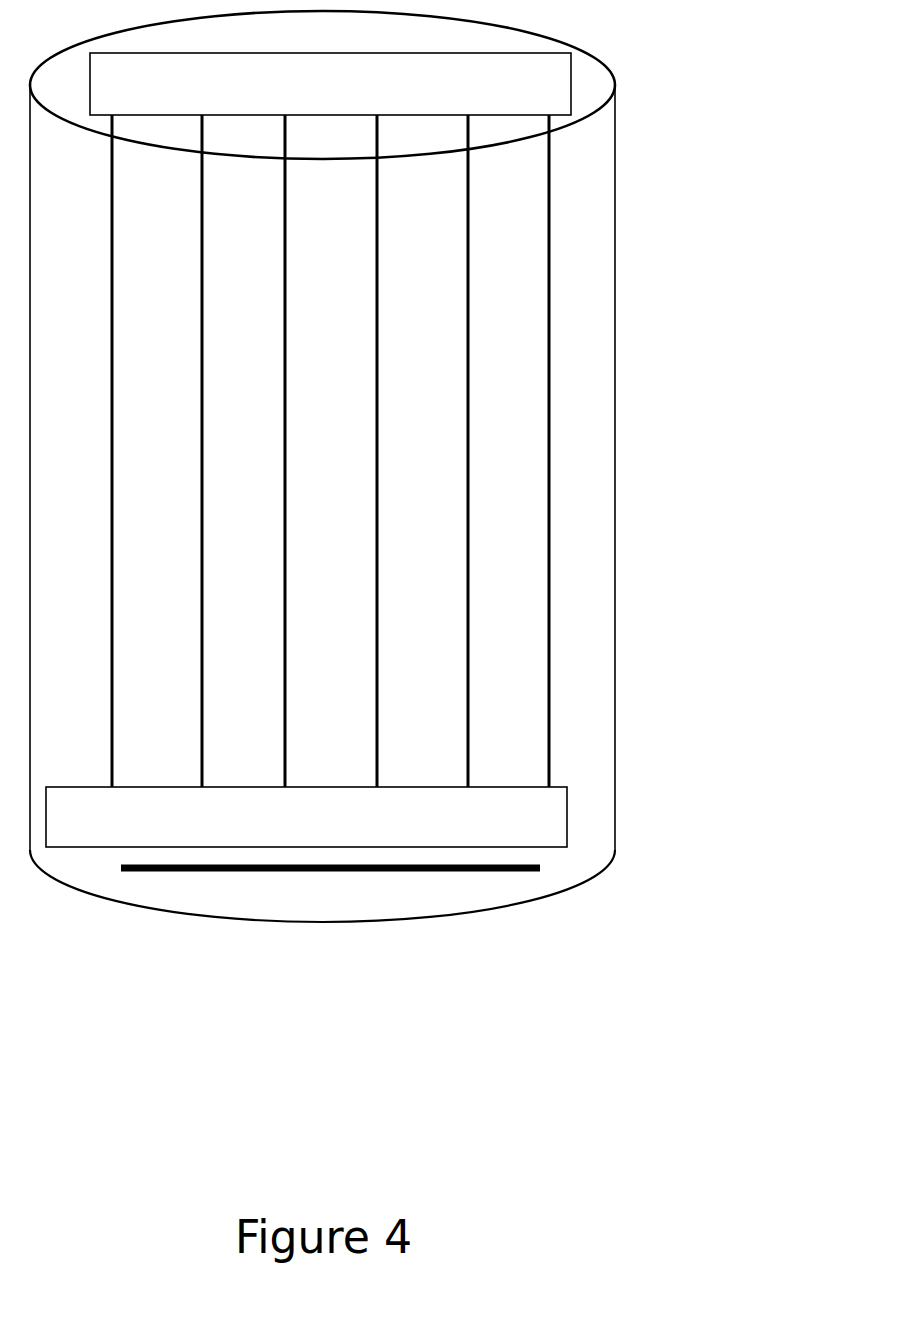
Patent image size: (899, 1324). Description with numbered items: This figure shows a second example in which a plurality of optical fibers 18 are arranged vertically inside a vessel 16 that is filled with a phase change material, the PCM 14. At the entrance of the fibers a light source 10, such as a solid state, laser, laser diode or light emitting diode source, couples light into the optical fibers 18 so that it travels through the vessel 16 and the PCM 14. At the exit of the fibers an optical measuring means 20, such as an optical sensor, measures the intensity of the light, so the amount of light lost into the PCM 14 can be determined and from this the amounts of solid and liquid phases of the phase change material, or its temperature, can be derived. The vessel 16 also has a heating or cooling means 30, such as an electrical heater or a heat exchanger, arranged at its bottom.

The light source 10 is at (330, 84).
The PCM filling 14 is at (432, 514).
The vessel 16 is at (616, 334).
The optical fibers 18 is at (550, 263).
The optical measuring means 20 is at (306, 817).
The heating or cooling means 30 is at (564, 867).